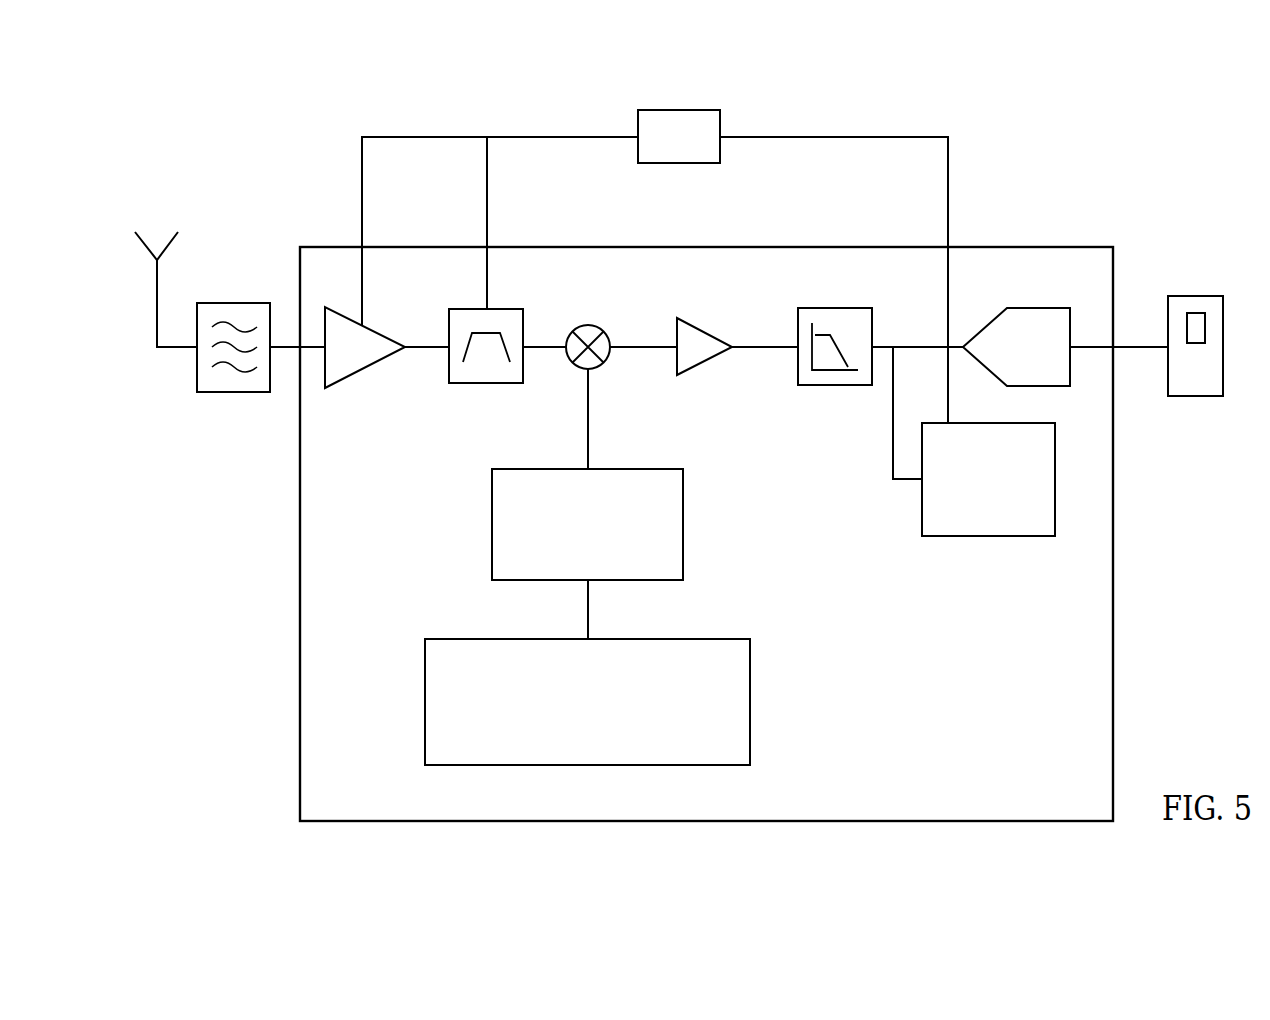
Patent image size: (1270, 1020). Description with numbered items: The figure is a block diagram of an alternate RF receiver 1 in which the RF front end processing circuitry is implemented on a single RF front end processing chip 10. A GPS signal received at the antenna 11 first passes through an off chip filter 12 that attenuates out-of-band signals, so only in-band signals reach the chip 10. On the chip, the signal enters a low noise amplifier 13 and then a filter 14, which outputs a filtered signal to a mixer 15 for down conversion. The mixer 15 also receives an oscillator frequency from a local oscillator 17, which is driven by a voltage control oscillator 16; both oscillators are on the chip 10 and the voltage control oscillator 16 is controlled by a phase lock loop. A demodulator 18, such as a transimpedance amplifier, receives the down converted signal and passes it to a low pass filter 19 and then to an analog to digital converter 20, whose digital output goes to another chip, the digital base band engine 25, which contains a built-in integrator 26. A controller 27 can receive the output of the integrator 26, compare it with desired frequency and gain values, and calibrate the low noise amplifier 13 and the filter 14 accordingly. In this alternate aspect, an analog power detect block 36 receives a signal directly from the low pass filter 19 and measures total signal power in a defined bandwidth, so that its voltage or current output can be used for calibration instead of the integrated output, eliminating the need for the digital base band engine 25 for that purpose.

The RF receiver 1 is at (229, 127).
The RF front end processing chip 10 is at (661, 247).
The antenna 11 is at (158, 268).
The off chip filter 12 is at (220, 392).
The low noise amplifier 13 is at (352, 382).
The filter 14 is at (470, 383).
The mixer 15 is at (604, 333).
The voltage control oscillator 16 is at (692, 639).
The local oscillator 17 is at (683, 492).
The demodulator 18 is at (700, 333).
The low pass filter 19 is at (830, 385).
The analog to digital converter 20 is at (1021, 308).
The digital base band engine 25 is at (1193, 396).
The integrator 26 is at (1205, 328).
The controller 27 is at (685, 110).
The analog power detect 36 is at (997, 536).